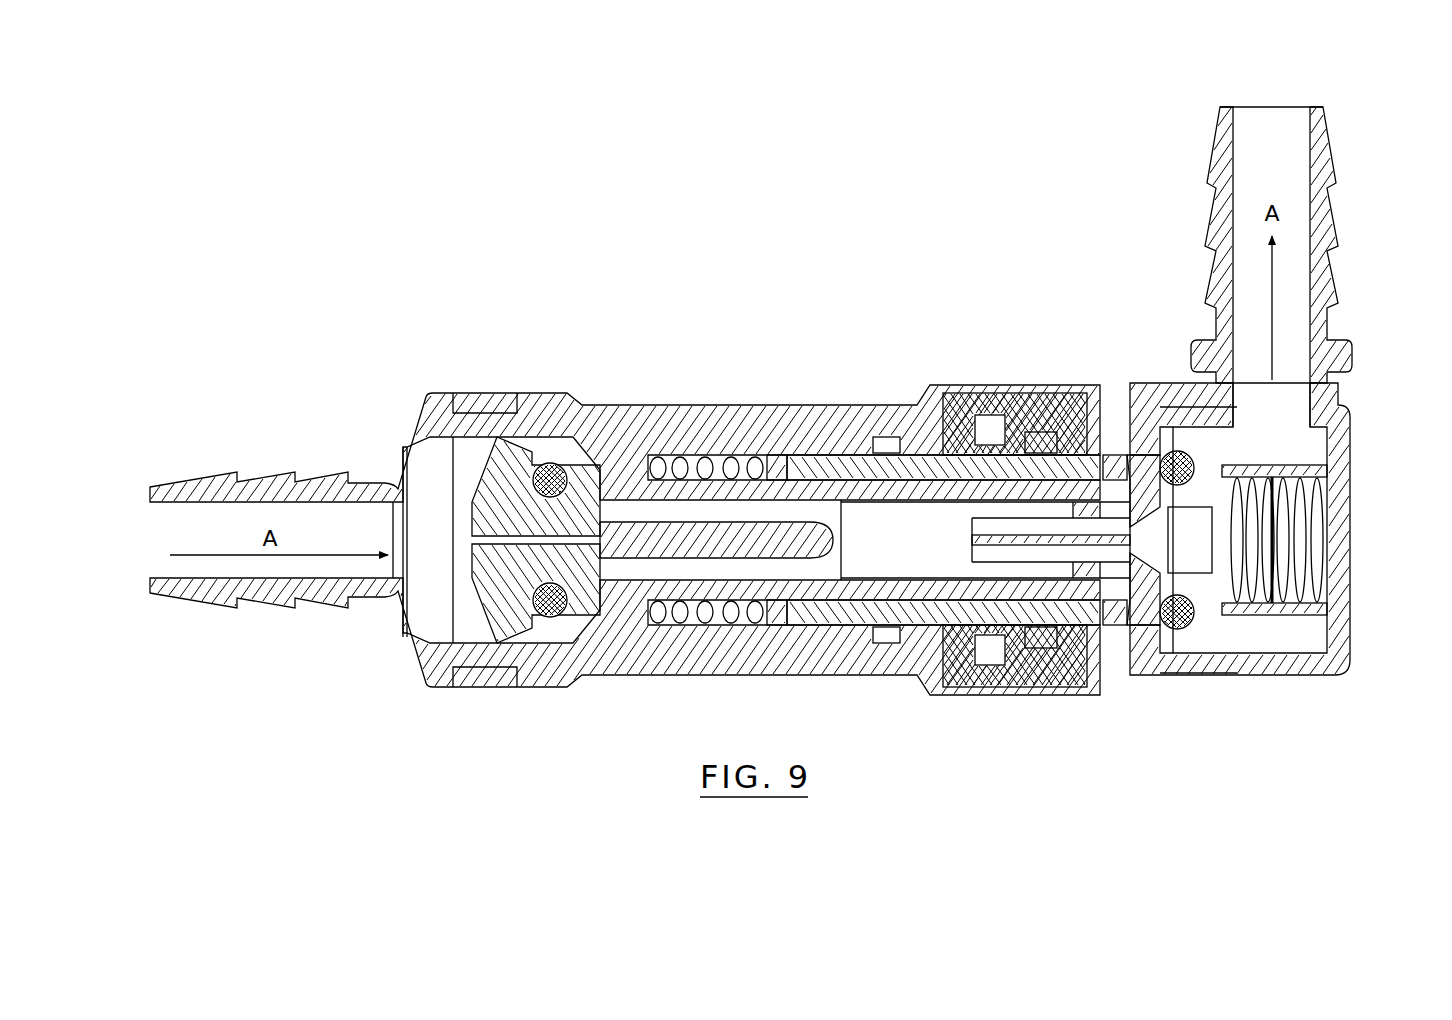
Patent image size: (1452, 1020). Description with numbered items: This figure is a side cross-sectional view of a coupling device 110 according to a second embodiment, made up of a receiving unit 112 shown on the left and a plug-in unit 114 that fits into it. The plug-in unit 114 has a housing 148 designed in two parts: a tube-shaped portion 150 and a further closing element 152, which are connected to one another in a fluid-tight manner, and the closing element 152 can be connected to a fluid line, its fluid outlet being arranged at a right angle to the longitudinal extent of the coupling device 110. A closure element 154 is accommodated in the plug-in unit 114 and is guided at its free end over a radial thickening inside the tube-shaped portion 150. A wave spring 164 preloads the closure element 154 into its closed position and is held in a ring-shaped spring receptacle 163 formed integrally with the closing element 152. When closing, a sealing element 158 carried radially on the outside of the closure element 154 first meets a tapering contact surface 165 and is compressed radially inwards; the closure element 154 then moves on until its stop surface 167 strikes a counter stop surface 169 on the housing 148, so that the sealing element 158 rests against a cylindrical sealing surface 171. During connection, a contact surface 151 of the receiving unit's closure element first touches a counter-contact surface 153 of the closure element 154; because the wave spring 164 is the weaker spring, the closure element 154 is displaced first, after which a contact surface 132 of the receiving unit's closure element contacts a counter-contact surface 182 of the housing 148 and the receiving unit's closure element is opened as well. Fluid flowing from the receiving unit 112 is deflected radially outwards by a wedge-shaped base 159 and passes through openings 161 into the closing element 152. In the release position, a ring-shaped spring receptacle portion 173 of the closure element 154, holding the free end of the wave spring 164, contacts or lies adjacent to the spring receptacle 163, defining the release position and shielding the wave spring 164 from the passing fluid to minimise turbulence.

The coupling device 110 is at (743, 237).
The receiving unit 112 is at (443, 338).
The plug-in unit 114 is at (1108, 309).
The contact surface 132 is at (783, 602).
The housing 148 is at (1340, 706).
The tube-shaped portion 150 is at (900, 428).
The contact surface 151 is at (812, 465).
The further closing element 152 is at (1212, 160).
The counter-contact surface 153 is at (853, 478).
The closure element 154 is at (900, 592).
The sealing element 158 is at (1160, 397).
The wedge-shaped base 159 is at (1205, 640).
The openings 161 is at (1108, 642).
The spring receptacle 163 is at (1323, 617).
The wave spring 164 is at (1303, 488).
The tapering contact surface 165 is at (1140, 625).
The stop surface 167 is at (1124, 430).
The counter stop surface 169 is at (1067, 400).
The cylindrical sealing surface 171 is at (1112, 615).
The spring receptacle portion 173 is at (1268, 640).
The counter-contact surface 182 is at (787, 603).